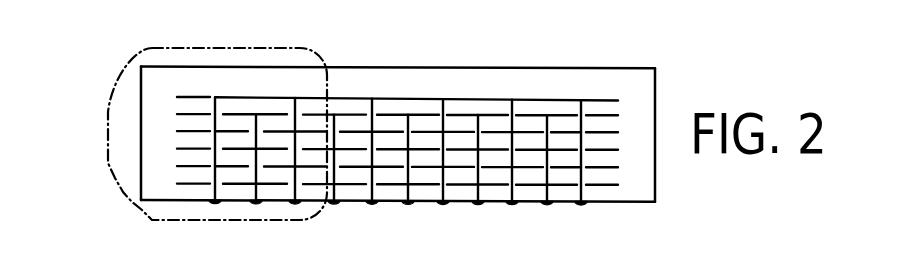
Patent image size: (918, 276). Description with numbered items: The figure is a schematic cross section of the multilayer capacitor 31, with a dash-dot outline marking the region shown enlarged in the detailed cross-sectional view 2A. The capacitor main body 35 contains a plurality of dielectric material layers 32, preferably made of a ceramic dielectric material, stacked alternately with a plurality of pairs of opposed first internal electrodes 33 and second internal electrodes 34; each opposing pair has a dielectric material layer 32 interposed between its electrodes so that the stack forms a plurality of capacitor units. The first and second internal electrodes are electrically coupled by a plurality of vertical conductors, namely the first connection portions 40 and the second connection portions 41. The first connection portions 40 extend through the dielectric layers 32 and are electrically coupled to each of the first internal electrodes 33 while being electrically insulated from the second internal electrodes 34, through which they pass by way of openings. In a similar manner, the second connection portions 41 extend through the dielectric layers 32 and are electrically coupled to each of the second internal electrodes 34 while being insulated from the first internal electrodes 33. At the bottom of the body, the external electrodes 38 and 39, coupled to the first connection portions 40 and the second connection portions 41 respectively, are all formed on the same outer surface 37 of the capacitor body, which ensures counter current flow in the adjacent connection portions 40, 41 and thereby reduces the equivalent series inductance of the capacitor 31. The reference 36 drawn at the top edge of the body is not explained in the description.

The detailed cross-sectional view 2A is at (104, 131).
The multilayer capacitor 31 is at (114, 59).
The dielectric material layers 32 is at (425, 125).
The first internal electrodes 33 is at (321, 150).
The second internal electrodes 34 is at (283, 130).
The capacitor main body 35 is at (580, 59).
The substrate top surface 36 is at (450, 67).
The outer surface 37 is at (495, 203).
The external electrode 38 is at (477, 205).
The external electrode 39 is at (583, 204).
The first connection portions 40 is at (258, 176).
The second connection portions 41 is at (213, 106).